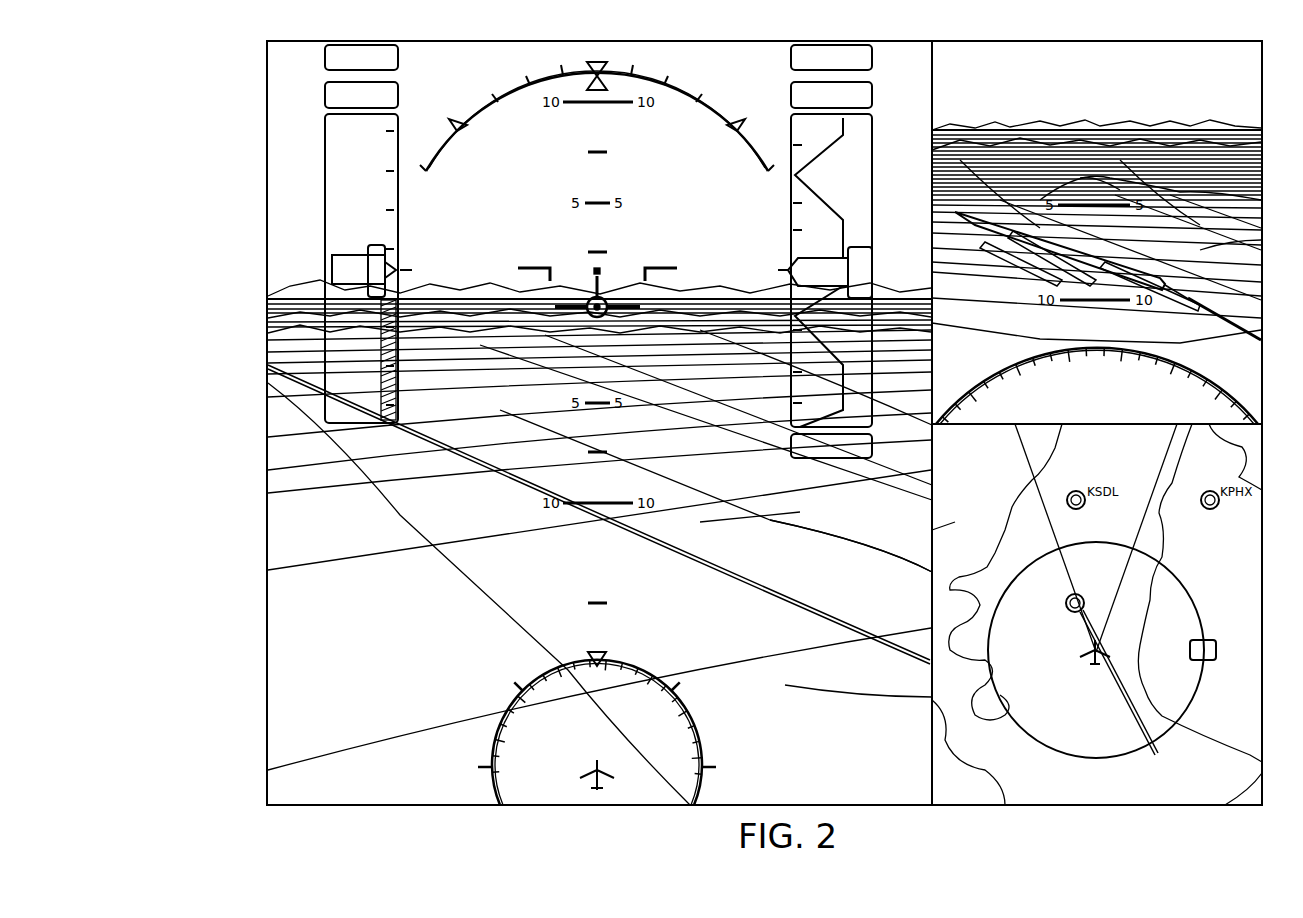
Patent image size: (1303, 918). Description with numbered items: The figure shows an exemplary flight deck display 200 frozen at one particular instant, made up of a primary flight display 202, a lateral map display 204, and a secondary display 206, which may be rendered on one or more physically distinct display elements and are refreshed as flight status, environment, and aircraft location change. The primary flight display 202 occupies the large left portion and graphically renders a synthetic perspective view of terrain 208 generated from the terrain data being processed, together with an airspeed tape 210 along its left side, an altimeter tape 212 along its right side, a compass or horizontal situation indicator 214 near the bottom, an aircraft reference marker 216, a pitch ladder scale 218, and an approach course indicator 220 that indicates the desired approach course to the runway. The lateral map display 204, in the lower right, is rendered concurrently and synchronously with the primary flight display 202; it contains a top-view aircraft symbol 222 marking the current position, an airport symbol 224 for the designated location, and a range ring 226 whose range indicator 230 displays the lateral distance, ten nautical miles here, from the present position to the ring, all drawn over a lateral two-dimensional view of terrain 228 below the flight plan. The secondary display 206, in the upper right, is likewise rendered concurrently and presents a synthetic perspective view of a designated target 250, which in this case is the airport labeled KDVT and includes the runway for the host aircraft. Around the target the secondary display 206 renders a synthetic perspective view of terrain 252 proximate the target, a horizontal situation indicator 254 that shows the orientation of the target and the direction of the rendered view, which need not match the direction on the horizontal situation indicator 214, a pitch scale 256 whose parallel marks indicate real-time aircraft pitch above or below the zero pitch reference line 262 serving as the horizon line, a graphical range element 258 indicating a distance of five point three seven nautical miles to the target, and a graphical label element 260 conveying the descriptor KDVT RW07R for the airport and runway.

The flight deck display 200 is at (238, 108).
The primary flight display 202 is at (540, 41).
The lateral map display 204 is at (1085, 805).
The secondary display 206 is at (1120, 41).
The synthetic perspective view of terrain 208 is at (796, 513).
The airspeed tape 210 is at (400, 222).
The altimeter tape 212 is at (793, 130).
The horizontal situation indicator 214 is at (704, 734).
The aircraft reference marker 216 is at (530, 266).
The pitch ladder scale 218 is at (580, 522).
The approach course indicator 220 is at (790, 600).
The top-view aircraft symbol 222 is at (1088, 663).
The airport symbol 224 is at (1066, 612).
The range ring 226 is at (1188, 588).
The lateral two-dimensional view of terrain 228 is at (944, 540).
The range indicator 230 is at (1212, 640).
The designated target 250 is at (1000, 262).
The synthetic perspective view of terrain 252 is at (1080, 178).
The horizontal situation indicator 254 is at (1190, 360).
The pitch scale 256 is at (1098, 312).
The graphical range element 258 is at (1090, 405).
The graphical label element 260 is at (1108, 78).
The zero pitch reference line 262 is at (1004, 130).